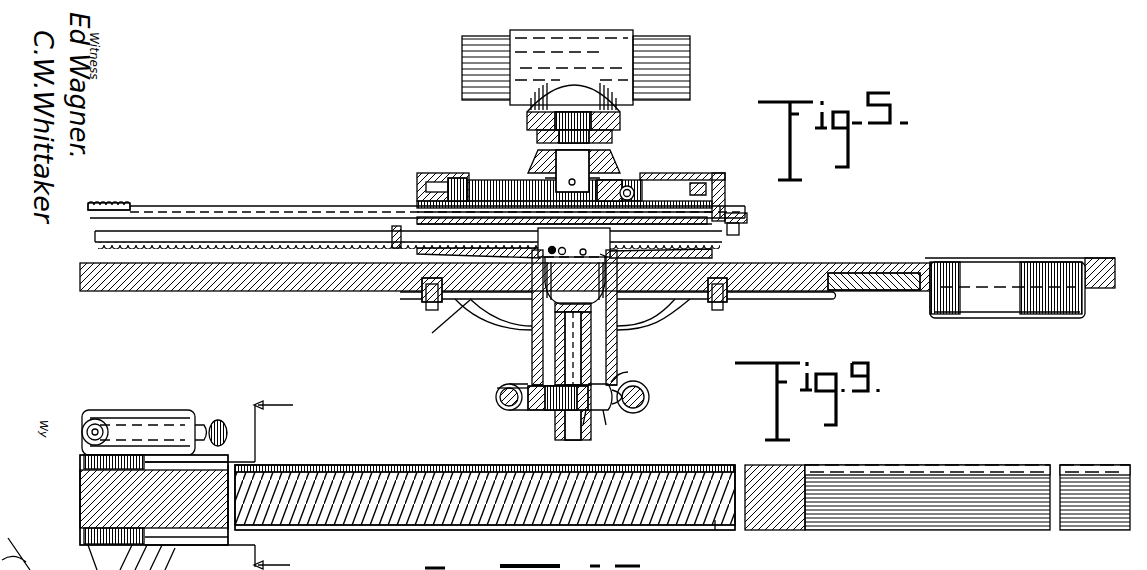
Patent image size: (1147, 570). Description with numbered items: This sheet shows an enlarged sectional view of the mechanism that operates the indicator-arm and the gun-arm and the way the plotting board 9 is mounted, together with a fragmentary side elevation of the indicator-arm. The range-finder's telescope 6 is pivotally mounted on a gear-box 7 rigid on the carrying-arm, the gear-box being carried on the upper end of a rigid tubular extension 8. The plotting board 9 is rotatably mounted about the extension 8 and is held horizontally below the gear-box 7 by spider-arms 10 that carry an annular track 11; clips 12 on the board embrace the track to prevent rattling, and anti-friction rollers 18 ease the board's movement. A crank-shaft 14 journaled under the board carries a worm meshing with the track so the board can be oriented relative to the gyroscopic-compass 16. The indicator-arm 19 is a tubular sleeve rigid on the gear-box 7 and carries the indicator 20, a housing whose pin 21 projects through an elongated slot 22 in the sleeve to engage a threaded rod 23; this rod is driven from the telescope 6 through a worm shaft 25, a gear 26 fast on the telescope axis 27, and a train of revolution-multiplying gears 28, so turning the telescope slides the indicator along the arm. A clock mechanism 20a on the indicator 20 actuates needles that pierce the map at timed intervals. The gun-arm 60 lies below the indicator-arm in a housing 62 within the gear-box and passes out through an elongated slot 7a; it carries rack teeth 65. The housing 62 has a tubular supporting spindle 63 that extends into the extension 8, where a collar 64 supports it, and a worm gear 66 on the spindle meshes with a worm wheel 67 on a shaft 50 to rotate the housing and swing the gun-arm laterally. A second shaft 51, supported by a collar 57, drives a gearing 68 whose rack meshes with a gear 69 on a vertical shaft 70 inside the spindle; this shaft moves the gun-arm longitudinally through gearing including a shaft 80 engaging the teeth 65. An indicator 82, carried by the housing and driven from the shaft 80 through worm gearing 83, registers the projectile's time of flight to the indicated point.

In FIG. 5, the range-finder's telescope 6 is at (664, 95).
In FIG. 5, the gear-box 7 is at (690, 173).
In FIG. 5, the elongated slot 7a is at (745, 232).
In FIG. 5, the tubular extension 8 is at (612, 332).
In FIG. 5, the plotting board 9 is at (216, 291).
In FIG. 5, the spider-arms 10 is at (500, 300).
In FIG. 9, the spider-arms 10 is at (238, 476).
In FIG. 5, the annular track 11 is at (438, 300).
In FIG. 5, the clips 12 is at (425, 302).
In FIG. 5, the crank-shaft 14 is at (832, 300).
In FIG. 5, the gyroscopic-compass 16 is at (1010, 312).
In FIG. 5, the anti-friction rollers 18 is at (430, 310).
In FIG. 5, the indicator-arm 19 is at (258, 206).
In FIG. 9, the indicator-arm 19 is at (490, 467).
In FIG. 9, the indicator 20 is at (146, 569).
In FIG. 9, the clock mechanism 20a is at (125, 420).
In FIG. 9, the pin 21 is at (80, 548).
In FIG. 9, the elongated slot 22 is at (715, 531).
In FIG. 5, the threaded rod 23 is at (112, 207).
In FIG. 9, the threaded rod 23 is at (332, 476).
In FIG. 5, the worm shaft 25 is at (638, 194).
In FIG. 5, the gear 26 is at (630, 181).
In FIG. 5, the axis 27 is at (598, 178).
In FIG. 5, the train of revolution-multiplying gears 28 is at (456, 174).
In FIG. 5, the shaft 50 is at (628, 412).
In FIG. 5, the shaft 51 is at (496, 399).
In FIG. 5, the collar 57 is at (497, 387).
In FIG. 5, the gun-arm 60 is at (215, 230).
In FIG. 5, the housing 62 is at (575, 280).
In FIG. 5, the tubular supporting spindle 63 is at (625, 386).
In FIG. 5, the collar 64 is at (548, 340).
In FIG. 5, the rack teeth 65 is at (312, 250).
In FIG. 5, the worm gear 66 is at (604, 420).
In FIG. 5, the worm wheel 67 is at (650, 402).
In FIG. 5, the gearing 68 is at (548, 386).
In FIG. 5, the gear 69 is at (537, 412).
In FIG. 5, the vertical shaft 70 is at (570, 432).
In FIG. 5, the shaft 80 is at (574, 244).
In FIG. 5, the indicator 82 is at (396, 225).
In FIG. 5, the worm gearing 83 is at (525, 300).